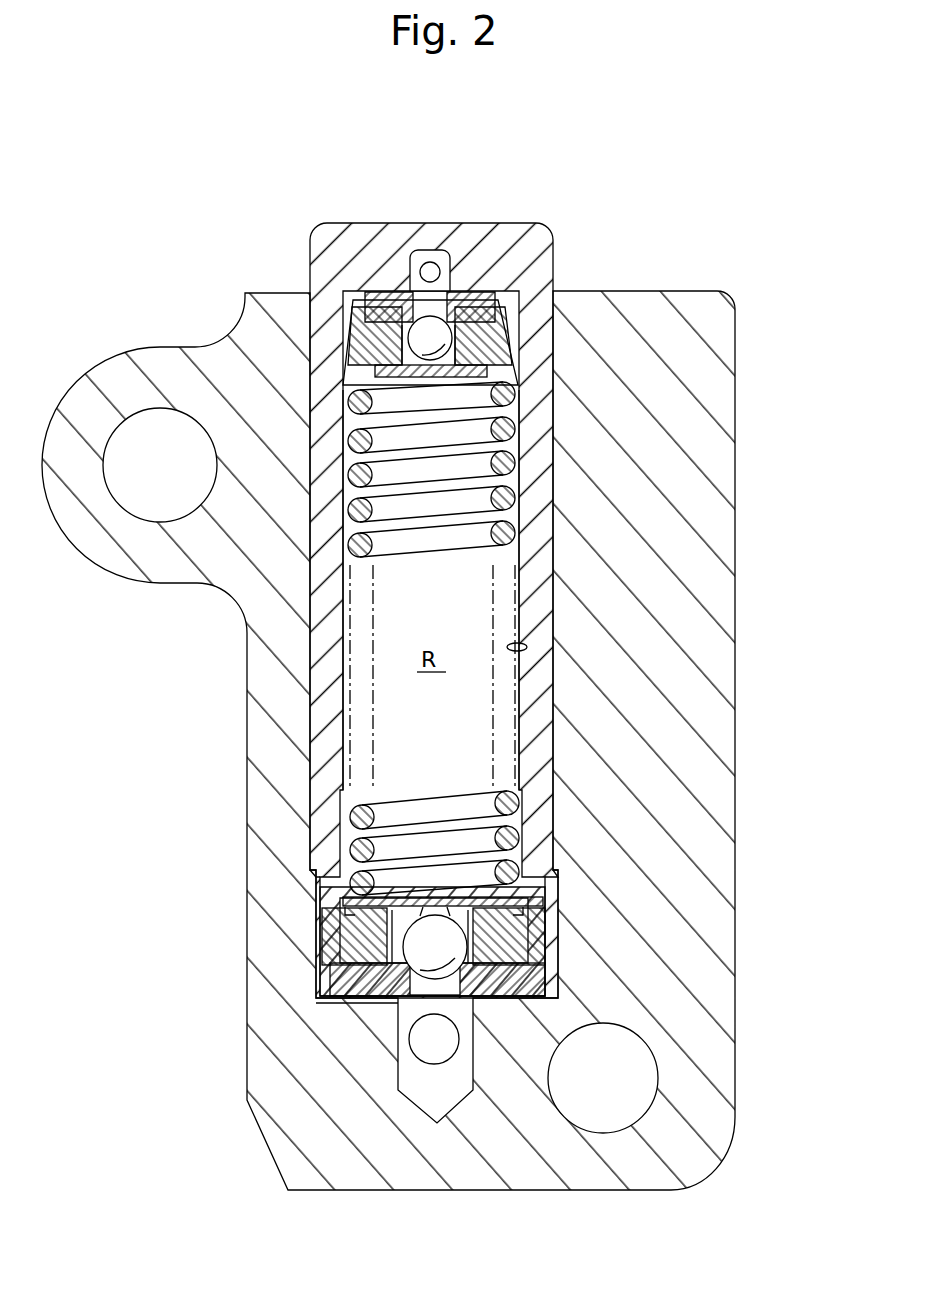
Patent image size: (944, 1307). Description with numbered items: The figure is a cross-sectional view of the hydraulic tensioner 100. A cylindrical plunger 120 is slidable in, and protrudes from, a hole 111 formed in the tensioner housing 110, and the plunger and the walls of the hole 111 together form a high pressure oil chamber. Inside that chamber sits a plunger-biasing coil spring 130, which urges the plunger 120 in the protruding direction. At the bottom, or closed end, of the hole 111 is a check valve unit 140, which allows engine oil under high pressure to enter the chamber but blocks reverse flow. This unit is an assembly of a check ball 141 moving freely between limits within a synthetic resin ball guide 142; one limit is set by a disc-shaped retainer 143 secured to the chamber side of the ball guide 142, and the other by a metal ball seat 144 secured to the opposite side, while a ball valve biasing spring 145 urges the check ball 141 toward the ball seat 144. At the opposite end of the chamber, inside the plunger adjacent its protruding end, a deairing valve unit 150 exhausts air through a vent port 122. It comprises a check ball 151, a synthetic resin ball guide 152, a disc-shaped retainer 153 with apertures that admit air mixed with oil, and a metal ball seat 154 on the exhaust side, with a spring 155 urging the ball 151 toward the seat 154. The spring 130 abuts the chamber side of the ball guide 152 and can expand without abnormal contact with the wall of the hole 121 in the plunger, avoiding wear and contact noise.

The tensioner 100 is at (563, 175).
The tensioner housing 110 is at (275, 965).
The hole 111 is at (322, 880).
The cylindrical plunger 120 is at (540, 692).
The hole in the plunger 121 is at (517, 647).
The vent port 122 is at (429, 263).
The plunger-biasing coil spring 130 is at (350, 818).
The check valve unit 140 is at (596, 933).
The check ball 141 is at (452, 940).
The ball guide 142 is at (520, 932).
The retainer 143 is at (483, 902).
The ball seat 144 is at (485, 985).
The ball valve biasing spring 145 is at (447, 910).
The deairing valve unit 150 is at (307, 264).
The check ball 151 is at (418, 330).
The ball guide 152 is at (400, 350).
The retainer 153 is at (363, 383).
The ball seat 154 is at (397, 303).
The spring 155 is at (383, 368).